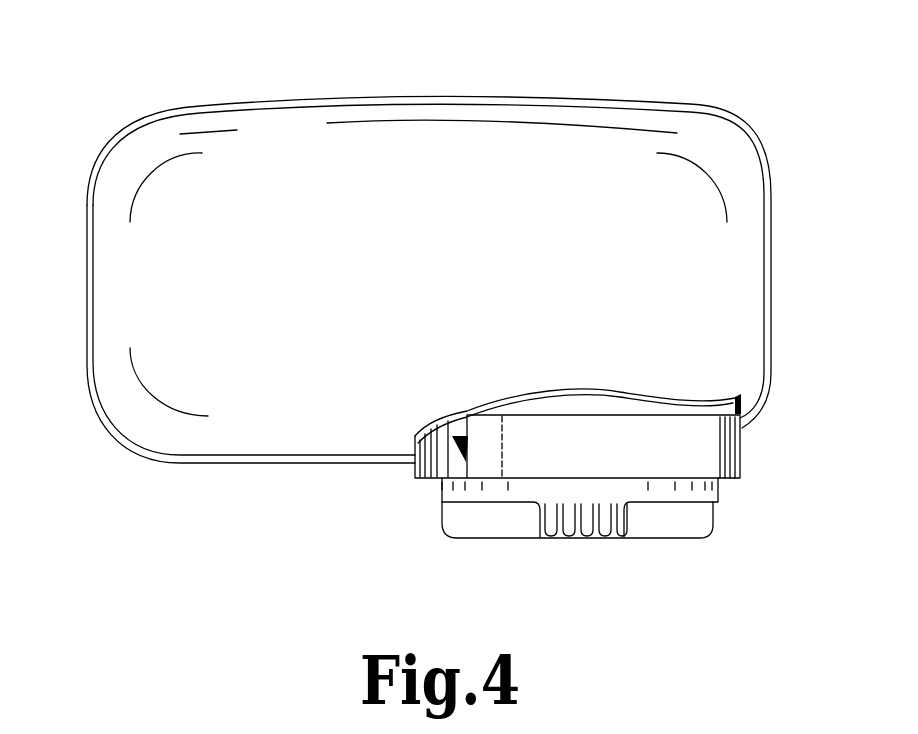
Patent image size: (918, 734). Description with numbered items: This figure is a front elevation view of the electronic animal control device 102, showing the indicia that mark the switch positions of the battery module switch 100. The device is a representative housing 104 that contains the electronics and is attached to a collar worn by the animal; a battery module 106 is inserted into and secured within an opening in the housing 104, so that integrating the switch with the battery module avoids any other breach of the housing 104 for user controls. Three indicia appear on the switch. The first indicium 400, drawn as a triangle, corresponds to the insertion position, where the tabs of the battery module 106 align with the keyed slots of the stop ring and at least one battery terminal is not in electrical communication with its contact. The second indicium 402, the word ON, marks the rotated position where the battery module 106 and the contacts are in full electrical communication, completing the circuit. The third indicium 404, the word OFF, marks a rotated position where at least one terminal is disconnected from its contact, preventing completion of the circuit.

The battery module switch 100 is at (591, 582).
The electronic animal control device 102 is at (88, 113).
The housing 104 is at (727, 293).
The battery module 106 is at (698, 523).
The first indicium 400 is at (458, 445).
The second indicium 402 is at (605, 443).
The third indicium 404 is at (712, 450).